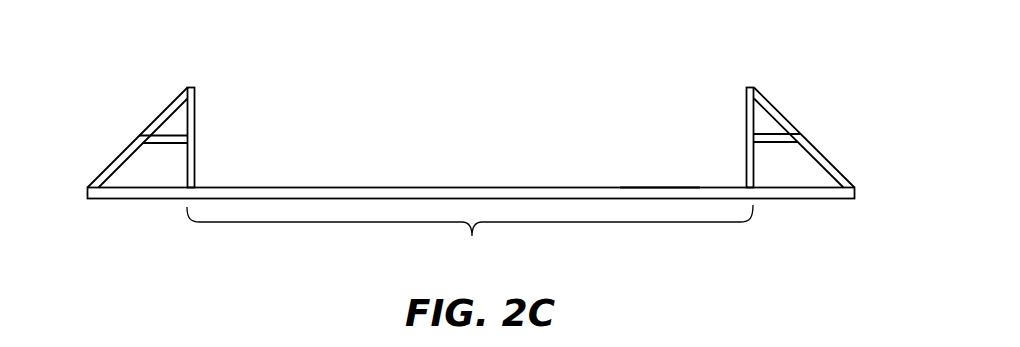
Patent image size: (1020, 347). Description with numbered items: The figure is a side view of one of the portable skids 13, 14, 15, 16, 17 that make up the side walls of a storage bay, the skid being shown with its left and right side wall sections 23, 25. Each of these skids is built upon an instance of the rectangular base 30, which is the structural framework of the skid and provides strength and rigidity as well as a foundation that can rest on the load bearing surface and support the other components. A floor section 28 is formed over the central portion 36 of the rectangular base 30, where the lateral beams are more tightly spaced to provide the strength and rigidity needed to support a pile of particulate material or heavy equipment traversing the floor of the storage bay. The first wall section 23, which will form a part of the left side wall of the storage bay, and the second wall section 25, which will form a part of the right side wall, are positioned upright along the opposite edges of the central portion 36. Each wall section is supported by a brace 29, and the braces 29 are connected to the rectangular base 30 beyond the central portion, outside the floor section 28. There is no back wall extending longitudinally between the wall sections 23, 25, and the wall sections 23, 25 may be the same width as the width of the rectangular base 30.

The portable skid 13 is at (126, 94).
The portable skid 14 is at (464, 118).
The portable skid 15 is at (464, 118).
The portable skid 16 is at (464, 118).
The portable skid 17 is at (464, 118).
The first wall section 23 is at (196, 108).
The second wall section 25 is at (746, 107).
The floor section 28 is at (458, 187).
The brace 29 is at (121, 153).
The rectangular base 30 is at (642, 189).
The central portion 36 is at (470, 236).